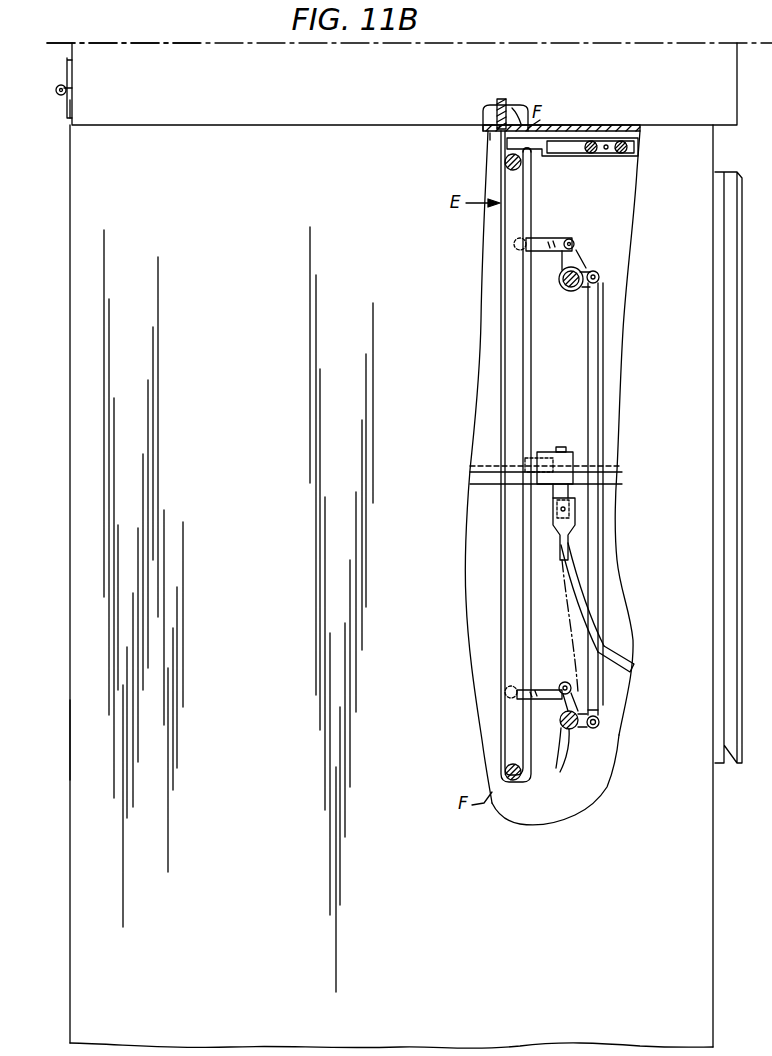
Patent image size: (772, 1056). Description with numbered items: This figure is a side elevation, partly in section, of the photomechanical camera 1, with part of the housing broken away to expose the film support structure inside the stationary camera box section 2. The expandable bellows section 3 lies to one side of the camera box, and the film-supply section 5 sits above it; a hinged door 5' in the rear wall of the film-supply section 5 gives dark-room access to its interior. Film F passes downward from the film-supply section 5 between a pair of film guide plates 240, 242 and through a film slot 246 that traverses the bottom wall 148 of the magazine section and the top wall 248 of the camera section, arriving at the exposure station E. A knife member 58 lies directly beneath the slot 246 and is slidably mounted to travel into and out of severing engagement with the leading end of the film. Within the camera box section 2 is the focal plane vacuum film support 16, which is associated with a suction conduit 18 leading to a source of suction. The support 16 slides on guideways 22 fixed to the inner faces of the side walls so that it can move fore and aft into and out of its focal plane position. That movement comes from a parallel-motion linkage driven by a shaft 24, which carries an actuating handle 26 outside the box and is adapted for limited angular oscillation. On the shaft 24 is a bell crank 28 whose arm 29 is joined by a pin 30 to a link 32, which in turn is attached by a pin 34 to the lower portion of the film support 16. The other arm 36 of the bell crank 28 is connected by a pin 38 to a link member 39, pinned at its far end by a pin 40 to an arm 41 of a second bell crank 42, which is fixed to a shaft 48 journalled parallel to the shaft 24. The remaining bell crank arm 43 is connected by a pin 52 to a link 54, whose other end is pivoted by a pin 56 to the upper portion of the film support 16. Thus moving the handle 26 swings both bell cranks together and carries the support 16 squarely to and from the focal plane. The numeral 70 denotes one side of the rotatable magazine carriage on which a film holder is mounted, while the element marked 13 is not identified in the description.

The photomechanical camera 1 is at (55, 108).
The stationary camera box section 2 is at (72, 740).
The expandable bellows section 3 is at (728, 766).
The film-supply section 5 is at (123, 37).
The hinged door 5' is at (45, 82).
The curved arm 13 is at (578, 624).
The focal plane vacuum film support 16 is at (500, 555).
The suction conduit 18 is at (620, 664).
The guideways 22 is at (607, 468).
The shaft 24 is at (576, 729).
The actuating handle 26 is at (562, 596).
The bell crank 28 is at (570, 740).
The arm 29 is at (558, 705).
The pin 30 is at (568, 680).
The link 32 is at (562, 682).
The pin 34 is at (505, 694).
The arm 36 is at (582, 735).
The pin 38 is at (600, 719).
The link member 39 is at (598, 570).
The pin 40 is at (600, 276).
The arm 41 is at (594, 271).
The bell crank 42 is at (582, 290).
The bell crank arm 43 is at (580, 262).
The shaft 48 is at (566, 289).
The pin 52 is at (571, 239).
The link 54 is at (548, 238).
The pin 56 is at (512, 246).
The knife member 58 is at (533, 152).
The side of carriage 70 is at (547, 452).
The bottom wall 148 is at (521, 124).
The film guide plate 240 is at (492, 108).
The film guide plate 242 is at (502, 111).
The film slot 246 is at (492, 136).
The top wall 248 is at (634, 126).